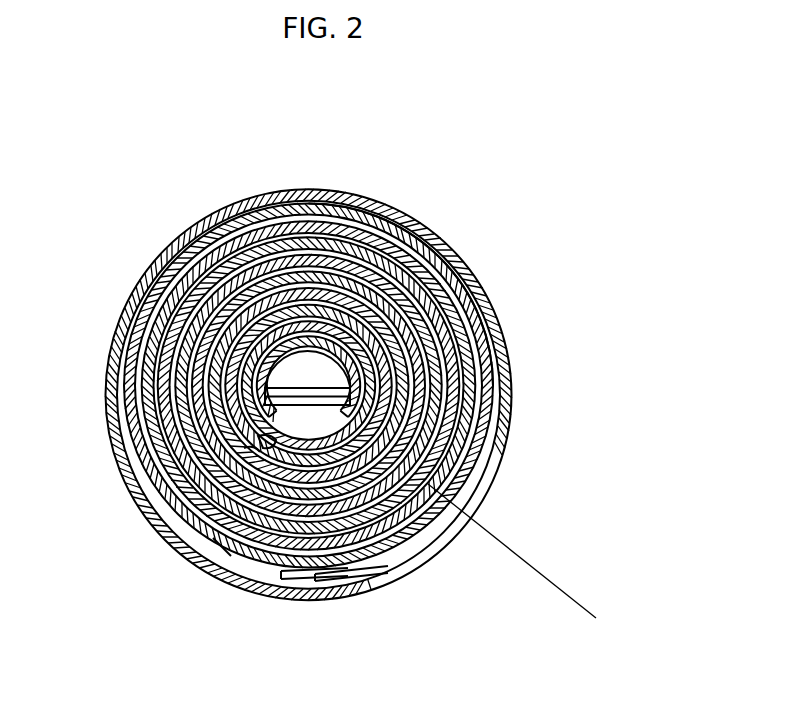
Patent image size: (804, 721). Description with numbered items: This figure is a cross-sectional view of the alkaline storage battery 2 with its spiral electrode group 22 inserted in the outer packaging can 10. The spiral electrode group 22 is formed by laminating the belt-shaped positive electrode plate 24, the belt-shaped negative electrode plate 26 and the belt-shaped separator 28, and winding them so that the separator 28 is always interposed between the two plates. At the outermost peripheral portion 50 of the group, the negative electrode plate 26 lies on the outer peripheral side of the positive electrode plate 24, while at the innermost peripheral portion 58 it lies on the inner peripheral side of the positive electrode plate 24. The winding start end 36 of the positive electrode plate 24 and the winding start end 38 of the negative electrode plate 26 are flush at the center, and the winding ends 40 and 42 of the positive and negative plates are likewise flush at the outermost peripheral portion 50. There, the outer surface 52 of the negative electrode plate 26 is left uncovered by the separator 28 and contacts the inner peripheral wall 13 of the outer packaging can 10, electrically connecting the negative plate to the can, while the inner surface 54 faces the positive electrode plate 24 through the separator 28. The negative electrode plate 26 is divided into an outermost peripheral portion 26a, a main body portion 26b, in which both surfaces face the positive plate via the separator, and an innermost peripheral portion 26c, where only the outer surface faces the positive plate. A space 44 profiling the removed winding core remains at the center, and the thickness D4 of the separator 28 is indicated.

The battery 2 is at (423, 172).
The outer packaging can 10 is at (481, 288).
The inner peripheral wall 13 is at (459, 273).
The spiral electrode group 22 is at (229, 560).
The positive electrode plate 24 is at (466, 432).
The negative electrode plate 26 is at (512, 349).
The outermost peripheral portion 26a is at (483, 318).
The main body portion 26b is at (203, 283).
The innermost peripheral portion 26c is at (203, 225).
The separator 28 is at (482, 383).
The winding start end 36 is at (255, 430).
The winding start end 38 is at (245, 437).
The winding end 40 is at (356, 556).
The winding end 42 is at (380, 545).
The space 44 is at (302, 368).
The outermost peripheral portion 50 is at (462, 232).
The outer surface 52 is at (302, 190).
The inner surface 54 is at (281, 333).
The innermost peripheral portion 58 is at (331, 304).
The thickness of the separator D4 is at (512, 551).